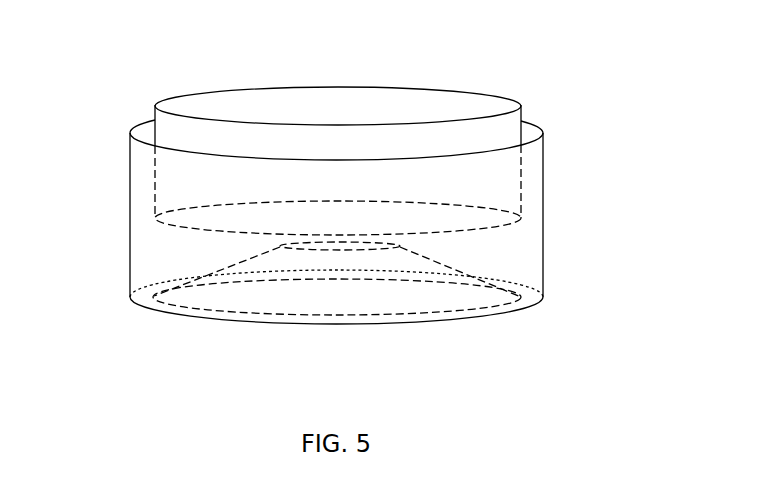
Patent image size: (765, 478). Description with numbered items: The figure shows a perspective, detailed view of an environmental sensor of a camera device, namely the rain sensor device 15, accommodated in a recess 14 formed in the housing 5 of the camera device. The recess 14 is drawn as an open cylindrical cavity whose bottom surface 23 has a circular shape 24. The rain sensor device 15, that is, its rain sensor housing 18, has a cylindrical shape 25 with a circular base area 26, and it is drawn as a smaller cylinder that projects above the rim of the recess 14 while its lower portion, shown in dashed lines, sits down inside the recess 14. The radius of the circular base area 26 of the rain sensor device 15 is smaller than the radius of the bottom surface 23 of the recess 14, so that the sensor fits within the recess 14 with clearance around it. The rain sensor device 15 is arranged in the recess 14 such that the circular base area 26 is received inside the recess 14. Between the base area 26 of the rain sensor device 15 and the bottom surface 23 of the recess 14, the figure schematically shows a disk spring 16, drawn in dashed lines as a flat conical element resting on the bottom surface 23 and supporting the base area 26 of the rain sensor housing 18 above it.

The housing 5 is at (130, 190).
The recess 14 is at (140, 129).
The rain sensor device 15 is at (338, 70).
The rain sensor housing 18 is at (338, 86).
The cylindrical shape 25 is at (338, 117).
The circular base area 26 is at (507, 228).
The disk spring 16 is at (462, 276).
The bottom surface 23 is at (322, 334).
The circular shape 24 is at (147, 310).